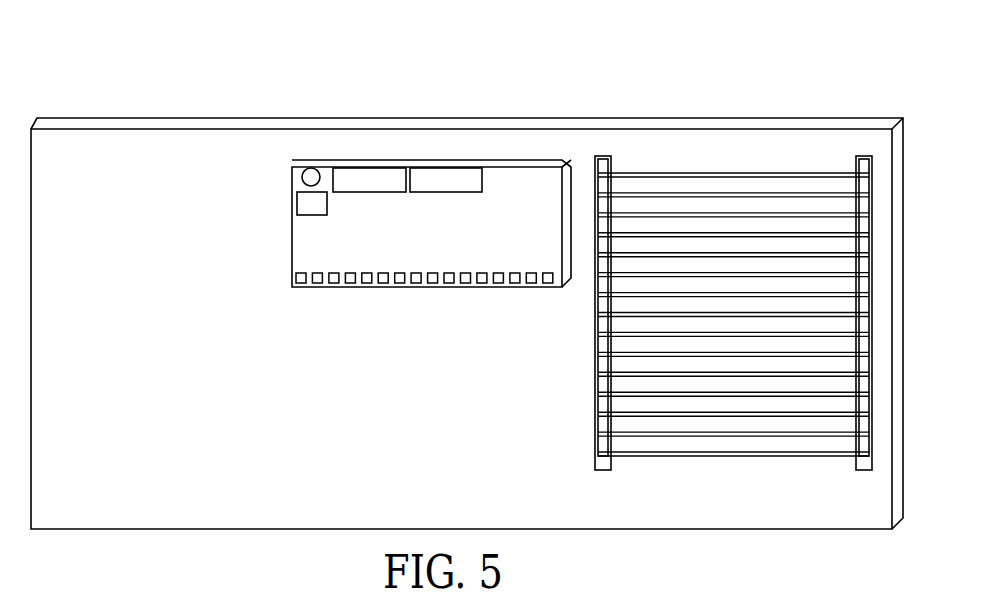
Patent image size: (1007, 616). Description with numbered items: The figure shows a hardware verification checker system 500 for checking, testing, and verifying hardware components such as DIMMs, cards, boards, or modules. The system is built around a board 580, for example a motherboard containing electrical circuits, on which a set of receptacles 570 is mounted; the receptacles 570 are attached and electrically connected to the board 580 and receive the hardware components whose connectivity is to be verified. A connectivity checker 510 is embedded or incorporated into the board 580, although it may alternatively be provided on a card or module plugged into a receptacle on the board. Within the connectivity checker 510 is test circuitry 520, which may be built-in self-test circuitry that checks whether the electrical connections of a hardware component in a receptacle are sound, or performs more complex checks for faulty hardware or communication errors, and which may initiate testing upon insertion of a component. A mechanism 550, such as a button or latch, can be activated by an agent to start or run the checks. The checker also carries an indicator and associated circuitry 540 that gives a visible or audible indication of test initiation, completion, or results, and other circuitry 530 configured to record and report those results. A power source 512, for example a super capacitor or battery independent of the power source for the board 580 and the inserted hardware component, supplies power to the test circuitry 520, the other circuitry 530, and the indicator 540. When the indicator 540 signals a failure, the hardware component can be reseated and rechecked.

The system 500 is at (84, 66).
The board 580 is at (192, 147).
The connectivity checker 510 is at (303, 245).
The power source 512 is at (297, 190).
The indicator and associated circuitry 540 is at (303, 172).
The mechanism 550 is at (385, 178).
The test circuitry 520 is at (420, 178).
The other circuitry 530 is at (452, 241).
The receptacles 570 is at (855, 223).